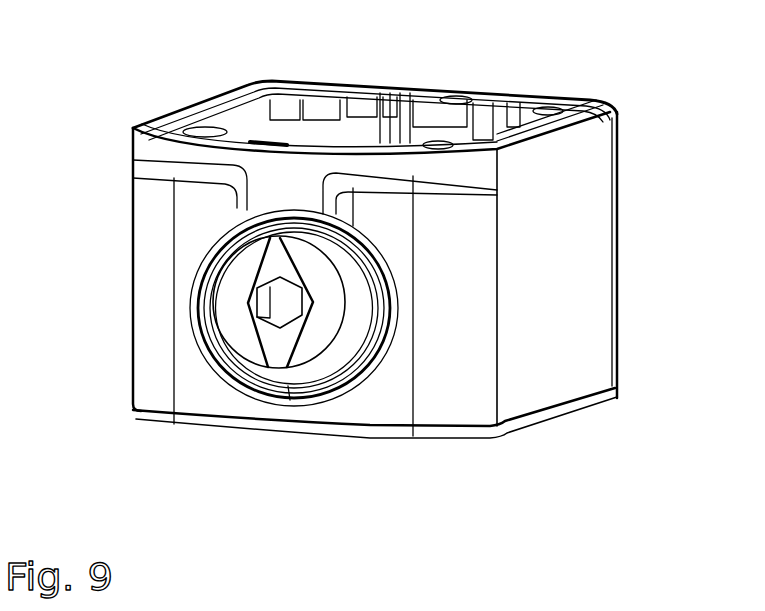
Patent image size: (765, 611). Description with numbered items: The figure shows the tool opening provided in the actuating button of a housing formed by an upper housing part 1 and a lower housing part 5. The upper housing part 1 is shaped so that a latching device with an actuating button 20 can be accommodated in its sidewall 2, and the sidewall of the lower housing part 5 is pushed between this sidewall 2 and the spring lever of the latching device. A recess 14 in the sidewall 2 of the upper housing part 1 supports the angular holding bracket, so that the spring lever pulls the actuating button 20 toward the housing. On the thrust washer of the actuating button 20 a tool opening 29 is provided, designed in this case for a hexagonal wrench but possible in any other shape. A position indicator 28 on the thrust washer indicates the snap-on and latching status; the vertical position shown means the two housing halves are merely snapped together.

The upper housing part 1 is at (640, 133).
The sidewall 2 is at (380, 405).
The lower housing part 5 is at (558, 440).
The recess 14 is at (467, 92).
The actuating button 20 is at (233, 319).
The position indicator 28 is at (280, 262).
The tool opening 29 is at (280, 307).